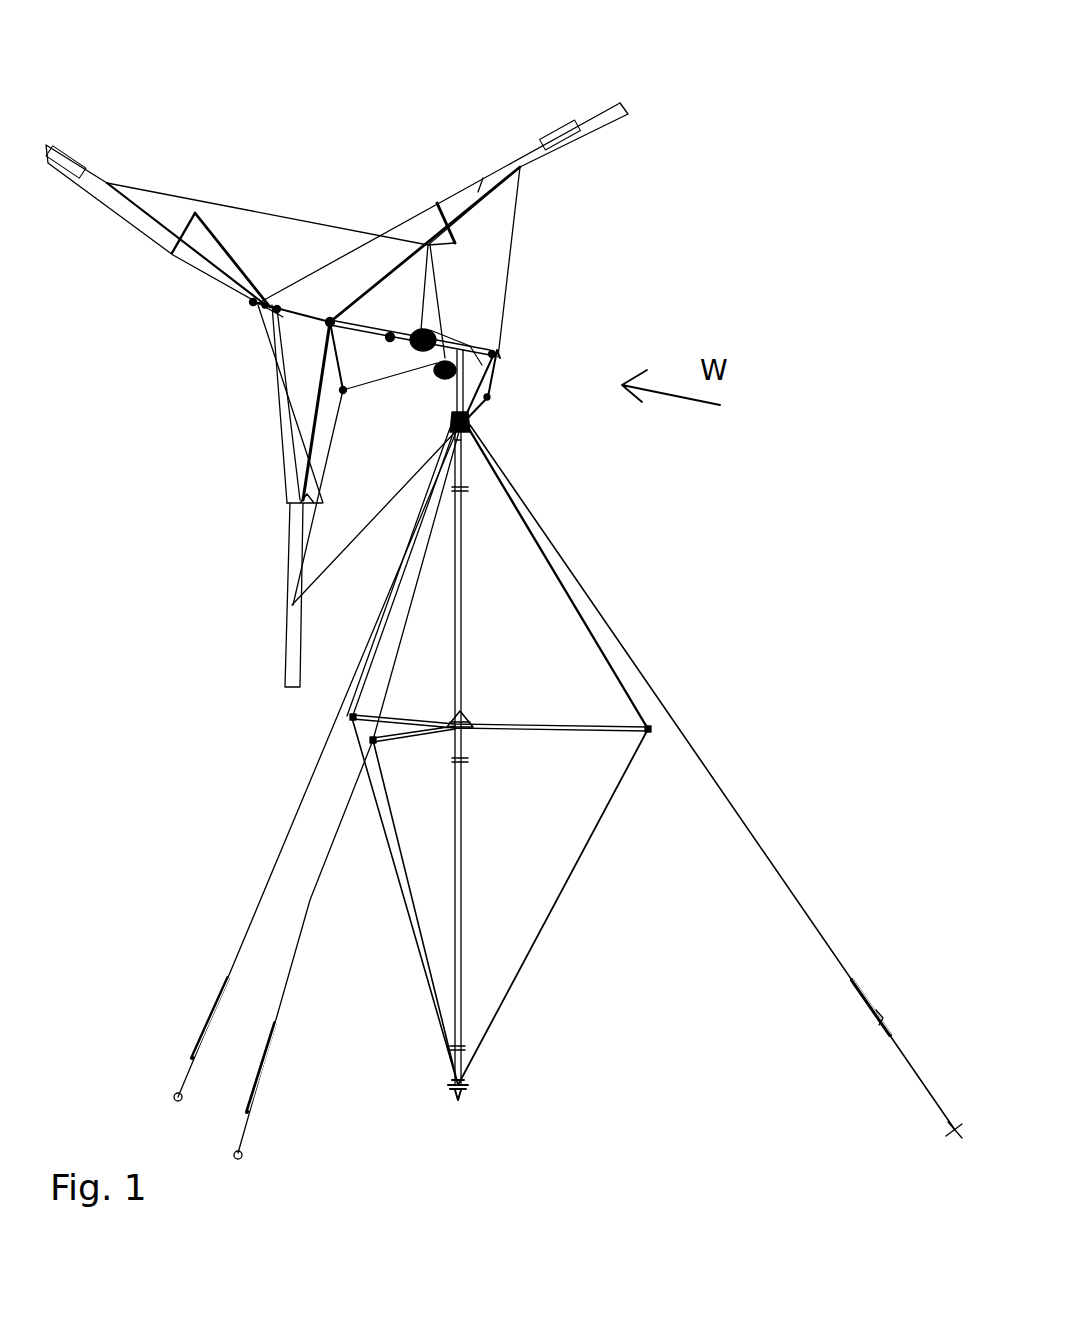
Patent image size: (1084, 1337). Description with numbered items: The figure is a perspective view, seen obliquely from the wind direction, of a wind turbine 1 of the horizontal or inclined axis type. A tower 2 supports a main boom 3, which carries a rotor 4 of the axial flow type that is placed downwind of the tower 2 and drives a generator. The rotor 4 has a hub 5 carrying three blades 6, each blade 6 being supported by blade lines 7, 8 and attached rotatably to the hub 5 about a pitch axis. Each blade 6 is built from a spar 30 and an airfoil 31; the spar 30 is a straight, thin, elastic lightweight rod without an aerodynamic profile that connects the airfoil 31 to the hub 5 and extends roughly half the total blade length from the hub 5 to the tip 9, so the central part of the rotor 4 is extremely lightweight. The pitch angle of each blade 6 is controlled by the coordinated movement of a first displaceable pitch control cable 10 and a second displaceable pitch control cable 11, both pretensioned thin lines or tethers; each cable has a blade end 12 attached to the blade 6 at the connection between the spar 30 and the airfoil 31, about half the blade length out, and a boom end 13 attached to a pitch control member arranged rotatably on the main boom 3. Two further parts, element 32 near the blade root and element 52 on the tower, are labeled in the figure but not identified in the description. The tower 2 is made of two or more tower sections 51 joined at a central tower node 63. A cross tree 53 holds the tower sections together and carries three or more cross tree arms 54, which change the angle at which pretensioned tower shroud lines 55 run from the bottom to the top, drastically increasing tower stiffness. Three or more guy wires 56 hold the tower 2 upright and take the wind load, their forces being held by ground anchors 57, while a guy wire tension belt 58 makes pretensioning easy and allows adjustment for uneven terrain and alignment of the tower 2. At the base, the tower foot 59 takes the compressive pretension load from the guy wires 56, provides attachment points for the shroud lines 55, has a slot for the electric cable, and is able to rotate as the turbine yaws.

The wind turbine 1 is at (787, 533).
The tower 2 is at (457, 660).
The main boom 3 is at (473, 340).
The rotor 4 is at (137, 548).
The hub 5 is at (297, 352).
The blade 6 is at (527, 152).
The blade line 7 is at (270, 213).
The blade line 8 is at (307, 345).
The tip 9 is at (488, 206).
The first displaceable pitch control cable 10 is at (173, 255).
The second displaceable pitch control cable 11 is at (215, 233).
The blade end 12 is at (428, 207).
The boom end 13 is at (288, 290).
The spar 30 is at (372, 293).
The airfoil 31 is at (483, 178).
The strut joint 32 is at (458, 231).
The tower section 51 is at (460, 877).
The mast top section 52 is at (463, 575).
The cross tree 53 is at (548, 710).
The cross tree arm 54 is at (530, 737).
The tower shroud line 55 is at (577, 867).
The guy wire 56 is at (732, 805).
The ground anchor 57 is at (240, 1153).
The guy wire tension belt 58 is at (277, 1048).
The tower foot 59 is at (460, 1097).
The central tower node 63 is at (447, 733).